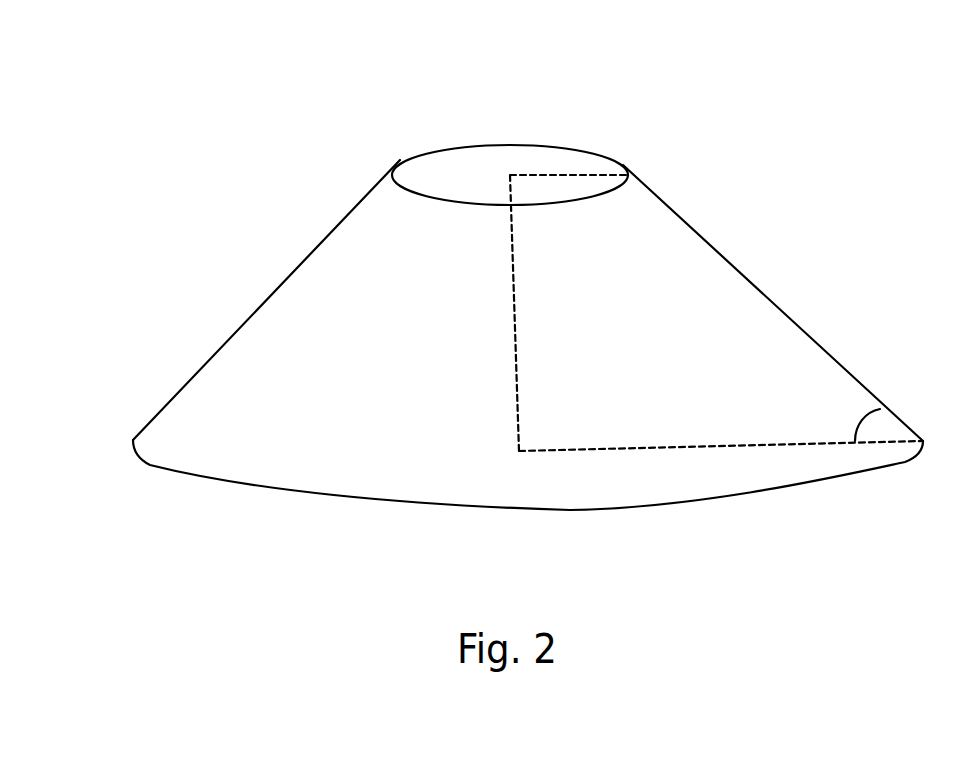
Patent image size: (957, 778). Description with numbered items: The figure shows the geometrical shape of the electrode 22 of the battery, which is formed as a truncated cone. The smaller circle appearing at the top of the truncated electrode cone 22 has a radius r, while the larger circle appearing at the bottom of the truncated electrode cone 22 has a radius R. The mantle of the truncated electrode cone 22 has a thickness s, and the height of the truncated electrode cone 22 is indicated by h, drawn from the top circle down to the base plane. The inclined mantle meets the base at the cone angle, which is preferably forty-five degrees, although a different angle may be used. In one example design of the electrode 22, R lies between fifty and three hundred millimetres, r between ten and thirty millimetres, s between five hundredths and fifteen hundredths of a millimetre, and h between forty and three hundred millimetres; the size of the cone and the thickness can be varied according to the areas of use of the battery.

The electrode 22 is at (501, 274).
The thickness of the mantle s is at (193, 334).
The radius of the smaller circle r is at (546, 149).
The height of the truncated electrode cone h is at (570, 334).
The radius of the larger circle R is at (660, 428).